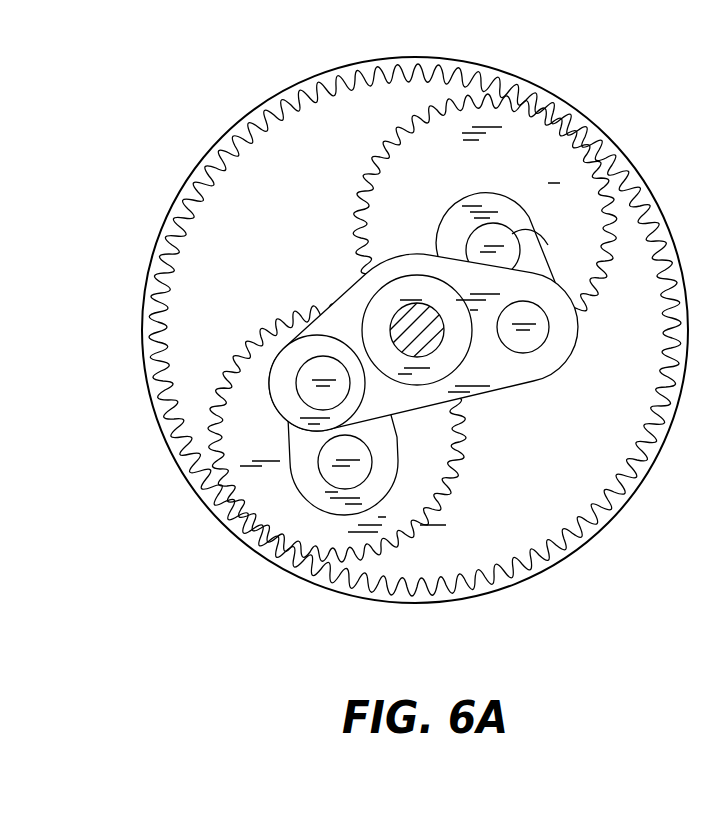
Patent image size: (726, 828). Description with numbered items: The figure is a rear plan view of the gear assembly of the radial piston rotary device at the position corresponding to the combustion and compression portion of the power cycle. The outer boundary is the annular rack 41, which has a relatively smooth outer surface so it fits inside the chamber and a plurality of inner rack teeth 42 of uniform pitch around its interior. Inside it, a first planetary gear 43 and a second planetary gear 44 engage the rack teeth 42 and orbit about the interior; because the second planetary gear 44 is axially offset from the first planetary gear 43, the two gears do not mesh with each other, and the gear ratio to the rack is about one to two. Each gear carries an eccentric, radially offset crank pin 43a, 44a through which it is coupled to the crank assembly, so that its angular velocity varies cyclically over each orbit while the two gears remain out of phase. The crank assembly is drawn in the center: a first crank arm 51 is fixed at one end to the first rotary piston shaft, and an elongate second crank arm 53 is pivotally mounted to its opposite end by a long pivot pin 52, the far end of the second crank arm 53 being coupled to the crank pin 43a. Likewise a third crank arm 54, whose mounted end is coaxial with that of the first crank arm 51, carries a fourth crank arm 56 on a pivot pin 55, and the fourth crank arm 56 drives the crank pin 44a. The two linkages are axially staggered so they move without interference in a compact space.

The annular rack 41 is at (212, 88).
The rack teeth 42 is at (182, 190).
The first planetary gear 43 is at (337, 433).
The crank pin 43a is at (412, 464).
The second planetary gear 44 is at (485, 226).
The crank pin 44a is at (552, 246).
The first crank arm 51 is at (515, 386).
The pivot pin 52 is at (578, 335).
The second crank arm 53 is at (494, 200).
The third crank arm 54 is at (270, 377).
The pivot pin 55 is at (272, 333).
The fourth crank arm 56 is at (372, 462).